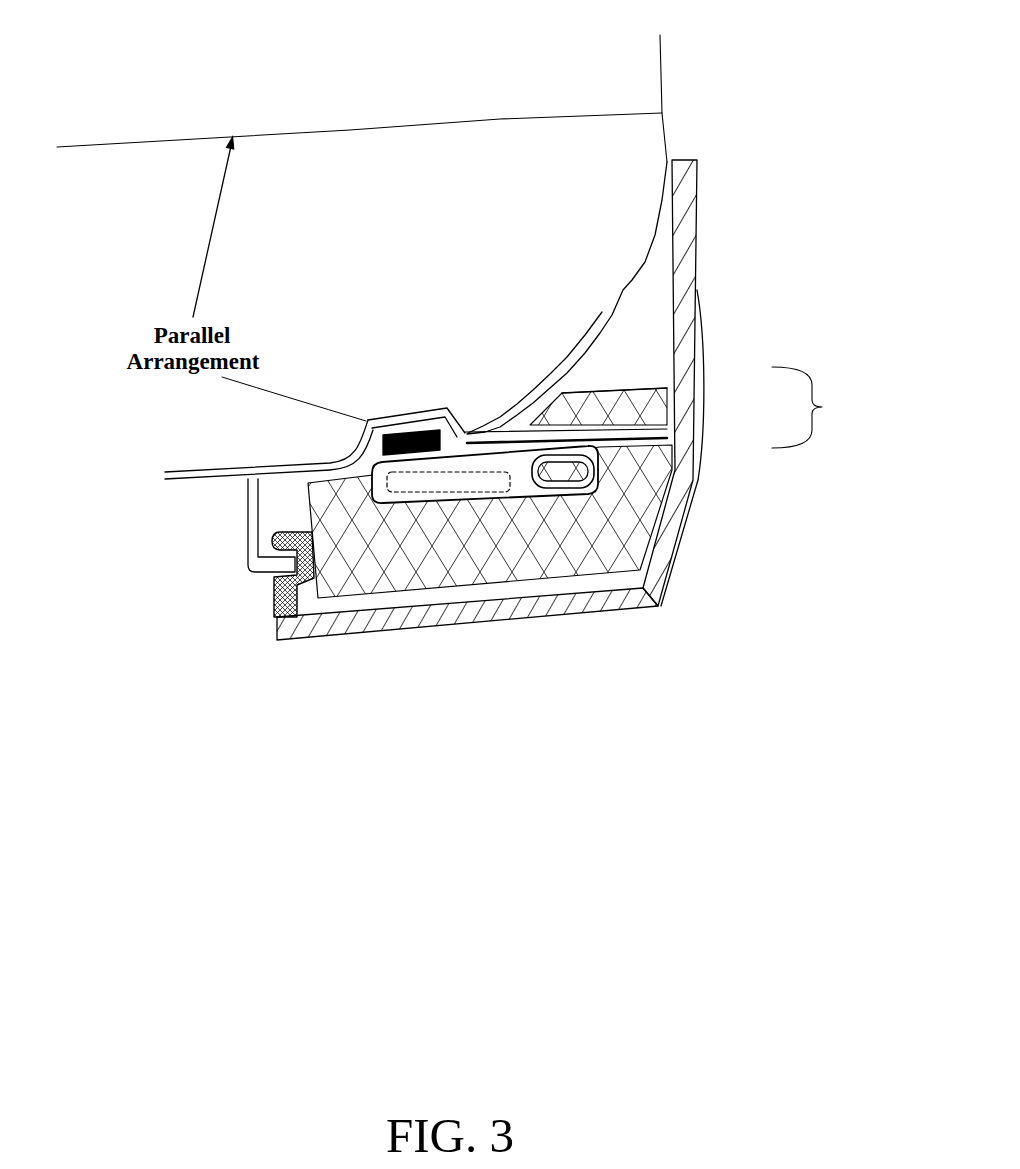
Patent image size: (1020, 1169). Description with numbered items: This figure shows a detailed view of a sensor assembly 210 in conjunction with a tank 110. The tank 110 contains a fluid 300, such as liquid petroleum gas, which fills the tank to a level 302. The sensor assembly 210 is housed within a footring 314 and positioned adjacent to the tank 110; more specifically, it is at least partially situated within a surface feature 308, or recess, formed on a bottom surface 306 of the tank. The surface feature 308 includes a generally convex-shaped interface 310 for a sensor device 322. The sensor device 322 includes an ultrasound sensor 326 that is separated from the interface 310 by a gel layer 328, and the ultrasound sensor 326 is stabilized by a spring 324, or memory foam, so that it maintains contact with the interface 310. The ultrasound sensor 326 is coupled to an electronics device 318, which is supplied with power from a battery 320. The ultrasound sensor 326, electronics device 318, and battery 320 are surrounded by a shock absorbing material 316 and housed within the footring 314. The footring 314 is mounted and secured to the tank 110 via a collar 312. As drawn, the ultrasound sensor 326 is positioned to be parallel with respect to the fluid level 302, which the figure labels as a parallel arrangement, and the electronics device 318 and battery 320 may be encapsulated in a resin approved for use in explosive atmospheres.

The tank 110 is at (660, 58).
The sensor assembly 210 is at (727, 331).
The fluid 300 is at (361, 193).
The level 302 is at (185, 135).
The bottom surface 306 is at (178, 482).
The surface feature 308 is at (452, 404).
The interface 310 is at (407, 414).
The collar 312 is at (253, 574).
The footring 314 is at (652, 572).
The shock absorbing material 316 is at (512, 550).
The electronics device 318 is at (308, 496).
The battery 320 is at (596, 472).
The sensor device 322 is at (818, 407).
The spring 324 is at (667, 438).
The ultrasound sensor 326 is at (530, 426).
The gel layer 328 is at (660, 387).